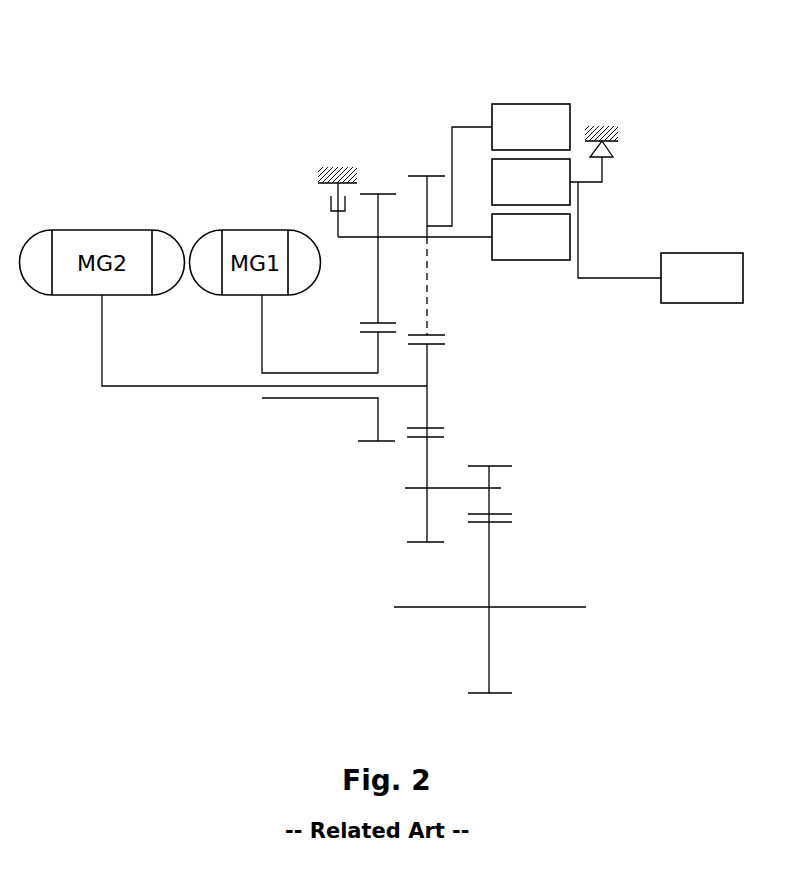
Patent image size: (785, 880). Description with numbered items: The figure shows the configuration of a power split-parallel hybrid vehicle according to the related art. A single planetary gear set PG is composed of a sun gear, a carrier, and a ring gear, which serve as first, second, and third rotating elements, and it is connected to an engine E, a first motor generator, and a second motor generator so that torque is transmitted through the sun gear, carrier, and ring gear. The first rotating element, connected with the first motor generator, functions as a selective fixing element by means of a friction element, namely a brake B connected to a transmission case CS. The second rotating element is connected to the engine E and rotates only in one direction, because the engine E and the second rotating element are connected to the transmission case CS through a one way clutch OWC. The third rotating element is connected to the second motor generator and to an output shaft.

The brake B is at (328, 203).
The transmission case CS is at (335, 167).
The one way clutch OWC is at (618, 150).
The planetary gear set PG is at (527, 268).
The engine E is at (702, 303).